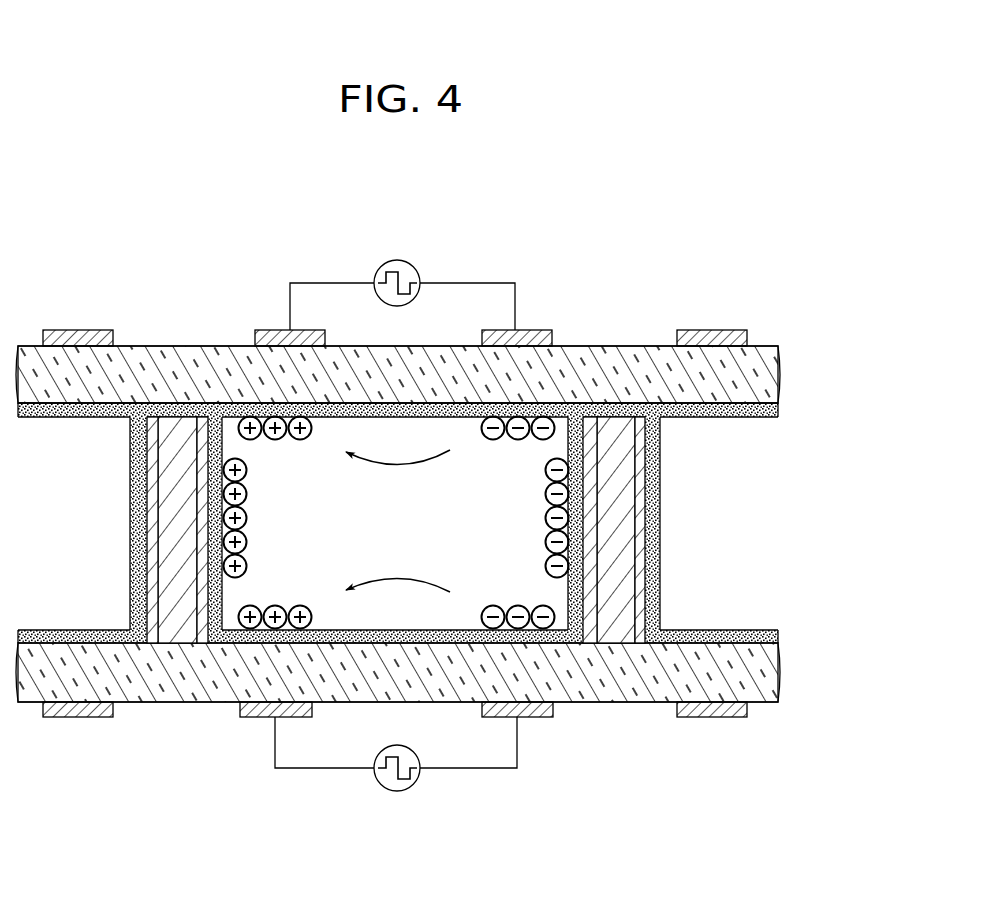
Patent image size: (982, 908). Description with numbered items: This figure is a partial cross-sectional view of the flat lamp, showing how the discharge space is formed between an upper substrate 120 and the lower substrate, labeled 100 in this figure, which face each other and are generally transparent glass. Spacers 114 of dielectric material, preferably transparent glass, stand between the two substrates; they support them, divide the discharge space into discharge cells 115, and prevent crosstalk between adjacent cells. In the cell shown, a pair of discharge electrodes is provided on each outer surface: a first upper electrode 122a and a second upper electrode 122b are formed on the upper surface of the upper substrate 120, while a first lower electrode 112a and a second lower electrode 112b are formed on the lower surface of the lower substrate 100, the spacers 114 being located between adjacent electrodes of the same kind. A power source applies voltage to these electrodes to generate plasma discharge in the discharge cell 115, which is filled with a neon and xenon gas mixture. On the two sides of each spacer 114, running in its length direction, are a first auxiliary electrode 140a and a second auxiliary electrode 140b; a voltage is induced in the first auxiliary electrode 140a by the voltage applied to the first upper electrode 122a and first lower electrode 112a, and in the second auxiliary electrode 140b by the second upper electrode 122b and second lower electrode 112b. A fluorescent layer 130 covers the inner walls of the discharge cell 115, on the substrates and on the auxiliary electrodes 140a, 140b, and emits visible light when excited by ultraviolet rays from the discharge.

The rear substrate 100 is at (778, 678).
The upper substrate 120 is at (778, 378).
The fluorescent layer 130 is at (778, 410).
The spacer 114 is at (172, 558).
The discharge cell 115 is at (420, 536).
The first lower electrode 112a is at (80, 717).
The second lower electrode 112b is at (535, 717).
The first upper electrode 122a is at (82, 330).
The second upper electrode 122b is at (530, 330).
The first auxiliary electrode 140a is at (195, 643).
The second auxiliary electrode 140b is at (637, 643).